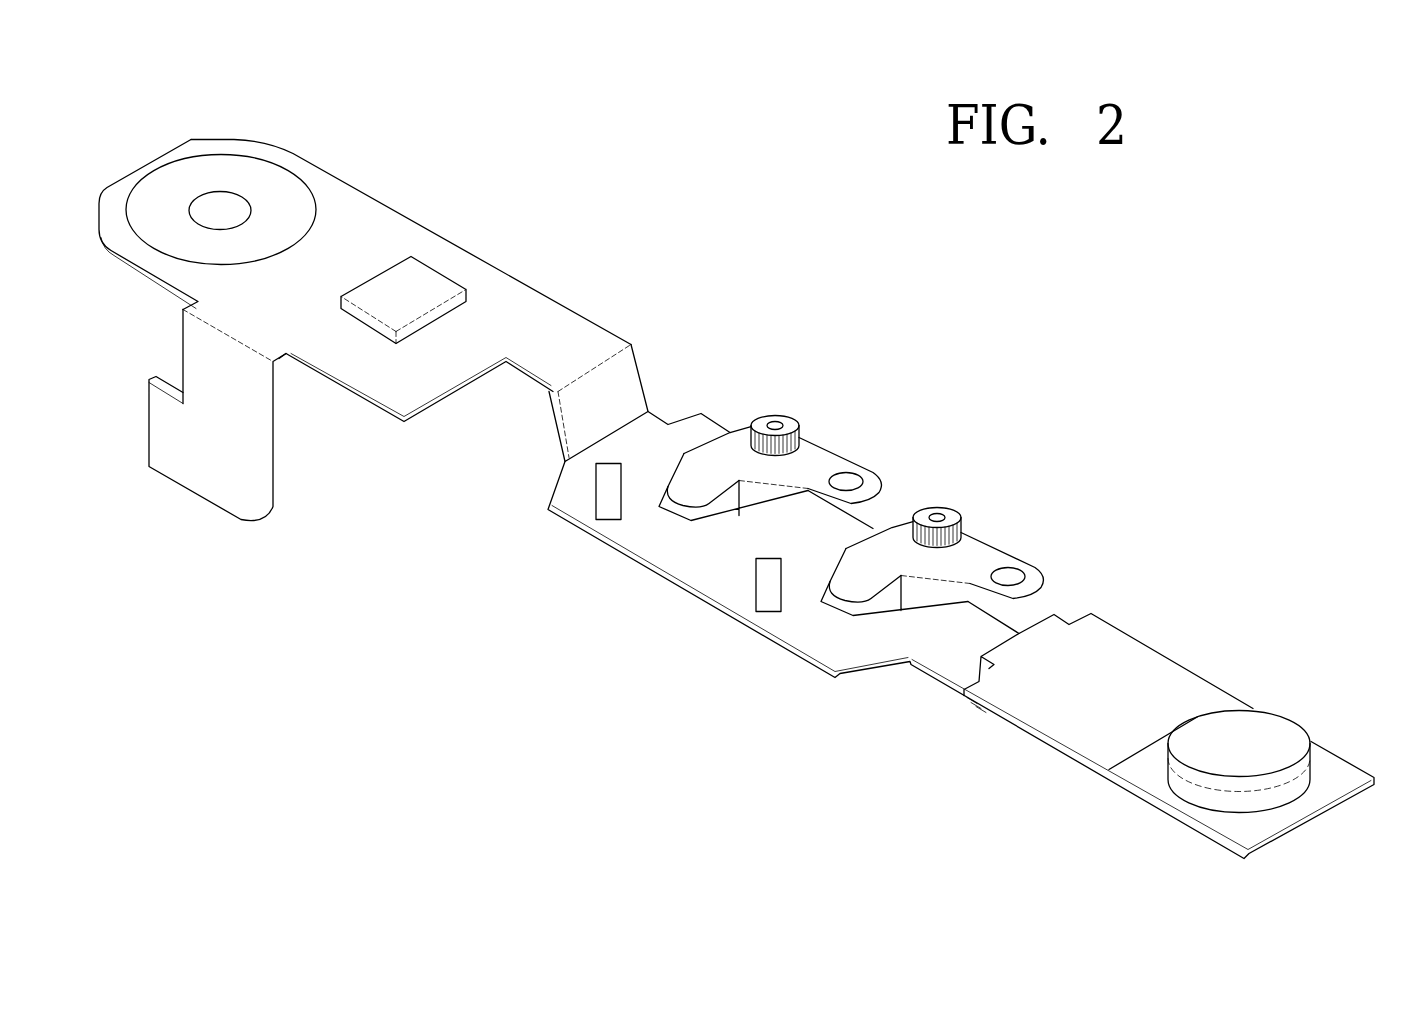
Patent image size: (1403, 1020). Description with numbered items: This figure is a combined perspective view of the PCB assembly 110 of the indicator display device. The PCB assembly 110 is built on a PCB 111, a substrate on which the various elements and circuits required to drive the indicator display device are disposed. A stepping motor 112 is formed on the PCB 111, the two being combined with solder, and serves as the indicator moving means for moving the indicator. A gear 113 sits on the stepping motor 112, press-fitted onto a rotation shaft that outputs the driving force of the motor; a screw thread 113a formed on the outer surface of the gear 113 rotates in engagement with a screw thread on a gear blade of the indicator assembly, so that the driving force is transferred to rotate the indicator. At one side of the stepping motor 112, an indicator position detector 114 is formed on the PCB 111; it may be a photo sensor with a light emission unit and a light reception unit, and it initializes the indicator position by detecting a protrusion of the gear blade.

The PCB assembly 110 is at (338, 138).
The PCB 111 is at (380, 227).
The stepping motor 112 is at (840, 457).
The gear 113 is at (780, 410).
The screw thread 113a is at (800, 448).
The indicator position detector 114 is at (748, 590).